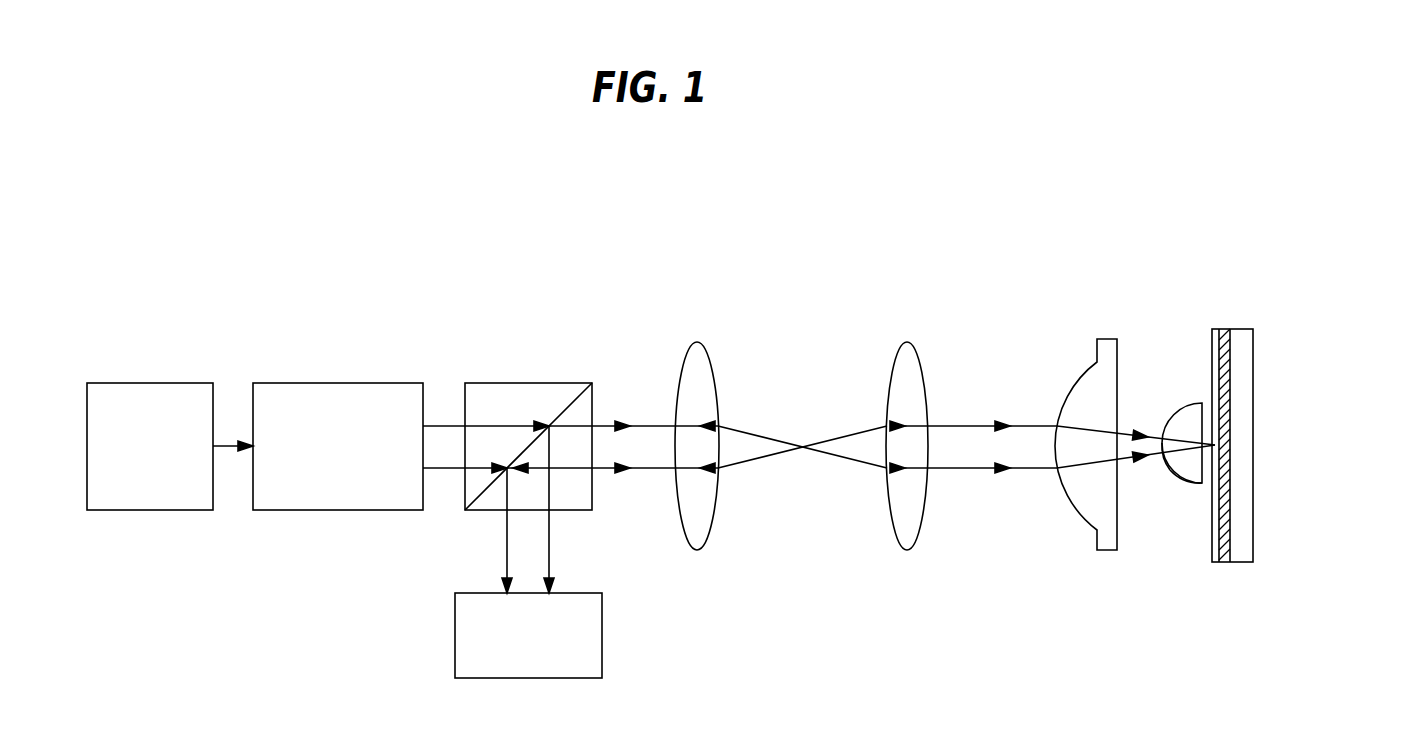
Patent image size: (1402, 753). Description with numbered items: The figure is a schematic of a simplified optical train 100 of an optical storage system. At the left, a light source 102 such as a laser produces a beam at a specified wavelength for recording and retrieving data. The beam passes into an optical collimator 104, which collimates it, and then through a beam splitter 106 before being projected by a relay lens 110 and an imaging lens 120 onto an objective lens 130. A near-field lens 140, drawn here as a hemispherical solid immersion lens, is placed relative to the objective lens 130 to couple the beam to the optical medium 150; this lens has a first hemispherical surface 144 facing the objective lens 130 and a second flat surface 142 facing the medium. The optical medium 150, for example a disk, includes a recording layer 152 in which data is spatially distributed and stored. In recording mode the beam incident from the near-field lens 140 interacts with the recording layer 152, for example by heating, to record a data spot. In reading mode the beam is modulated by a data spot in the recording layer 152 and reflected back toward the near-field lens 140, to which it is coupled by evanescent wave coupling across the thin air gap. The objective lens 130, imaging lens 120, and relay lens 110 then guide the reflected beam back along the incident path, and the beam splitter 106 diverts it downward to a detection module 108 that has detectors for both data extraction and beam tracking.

The optical train 100 is at (238, 268).
The light source 102 is at (140, 510).
The optical collimator 104 is at (340, 510).
The beam splitter 106 is at (517, 383).
The detection module 108 is at (455, 653).
The relay lens 110 is at (697, 550).
The imaging lens 120 is at (897, 345).
The objective lens 130 is at (1077, 517).
The near-field lens 140 is at (1191, 382).
The second flat surface 142 is at (1202, 483).
The first hemispherical surface 144 is at (1163, 468).
The optical medium 150 is at (1270, 406).
The recording layer 152 is at (1225, 562).